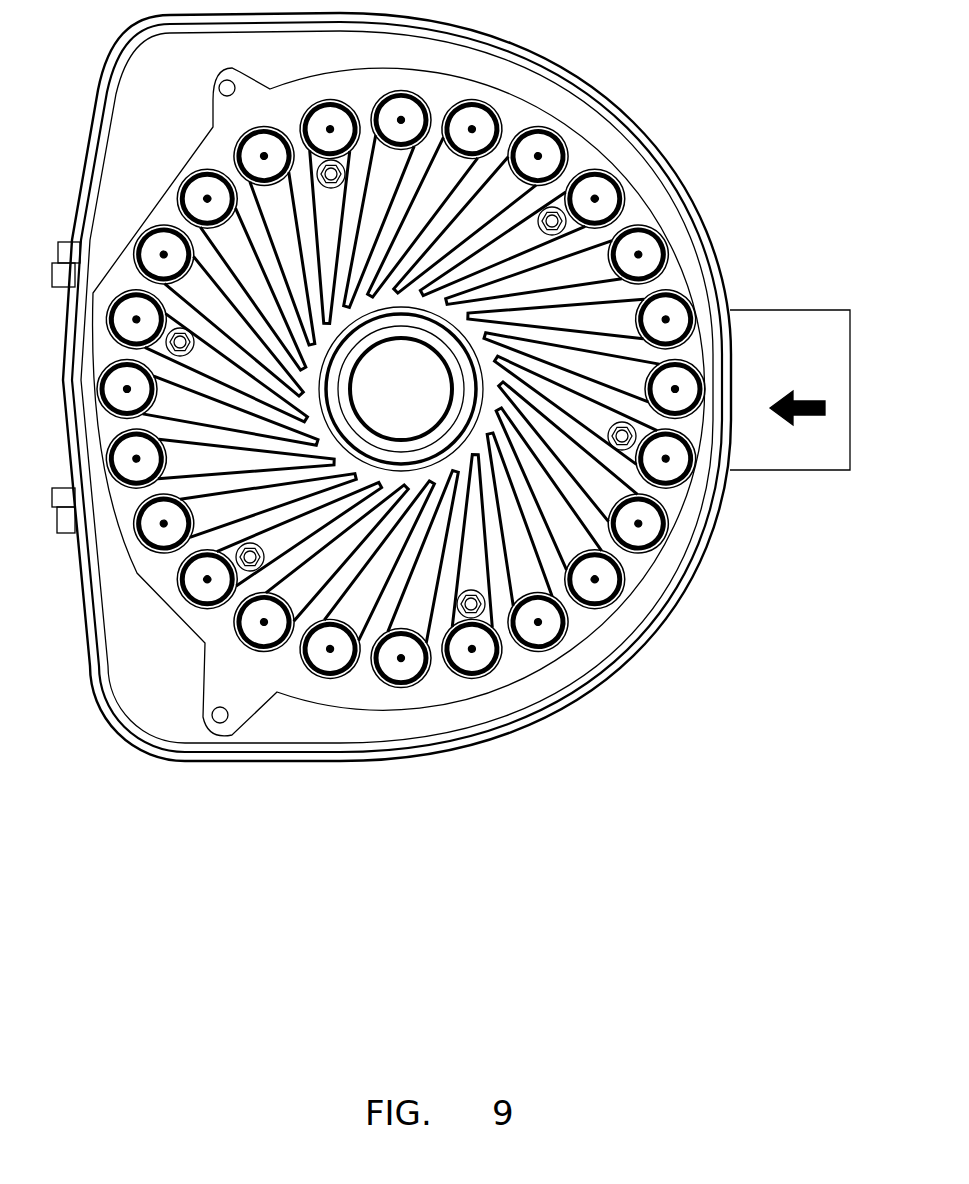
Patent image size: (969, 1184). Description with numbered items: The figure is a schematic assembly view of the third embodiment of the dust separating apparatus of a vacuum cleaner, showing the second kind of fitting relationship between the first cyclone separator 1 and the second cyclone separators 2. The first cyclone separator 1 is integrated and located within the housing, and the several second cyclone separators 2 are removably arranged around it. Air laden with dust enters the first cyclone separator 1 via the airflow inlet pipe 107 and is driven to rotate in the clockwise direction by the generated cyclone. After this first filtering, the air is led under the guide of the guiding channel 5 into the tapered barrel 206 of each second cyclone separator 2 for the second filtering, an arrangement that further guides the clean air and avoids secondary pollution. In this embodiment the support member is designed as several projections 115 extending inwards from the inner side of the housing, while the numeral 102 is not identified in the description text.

The first cyclone separator 1 is at (190, 765).
The housing cover 102 is at (318, 760).
The second cyclone separator 2 is at (381, 437).
The tapered barrel 206 is at (388, 690).
The guiding channel 5 is at (180, 572).
The projection 115 is at (592, 178).
The airflow inlet pipe 107 is at (793, 437).